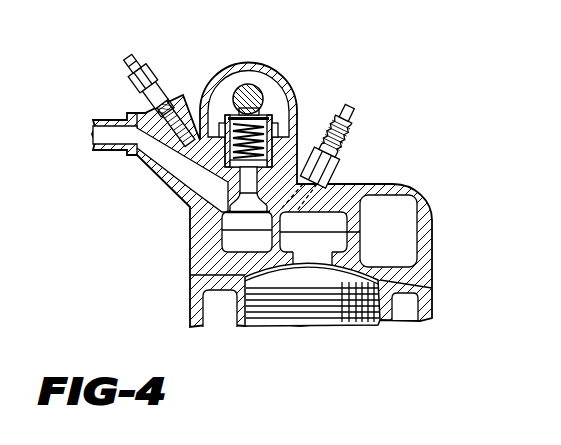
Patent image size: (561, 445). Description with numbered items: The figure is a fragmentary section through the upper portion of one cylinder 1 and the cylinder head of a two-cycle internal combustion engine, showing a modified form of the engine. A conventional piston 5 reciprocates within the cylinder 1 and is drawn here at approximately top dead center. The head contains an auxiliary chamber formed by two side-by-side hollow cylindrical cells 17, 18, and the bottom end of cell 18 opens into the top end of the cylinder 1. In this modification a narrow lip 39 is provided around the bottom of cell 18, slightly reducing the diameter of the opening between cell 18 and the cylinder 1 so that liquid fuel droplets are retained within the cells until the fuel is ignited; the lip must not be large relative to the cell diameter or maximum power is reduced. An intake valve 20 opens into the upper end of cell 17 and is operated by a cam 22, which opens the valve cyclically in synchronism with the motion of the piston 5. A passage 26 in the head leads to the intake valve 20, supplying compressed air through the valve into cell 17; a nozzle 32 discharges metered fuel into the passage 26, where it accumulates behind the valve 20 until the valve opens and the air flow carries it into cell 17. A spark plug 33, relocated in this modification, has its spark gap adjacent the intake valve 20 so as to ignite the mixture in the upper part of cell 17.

The cylinder 1 is at (363, 272).
The piston 5 is at (304, 277).
The cell 17 is at (237, 237).
The cell 18 is at (346, 190).
The intake valve 20 is at (223, 230).
The cam 22 is at (253, 93).
The passage 26 is at (182, 164).
The nozzle 32 is at (155, 87).
The spark plug 33 is at (328, 163).
The lip 39 is at (315, 257).